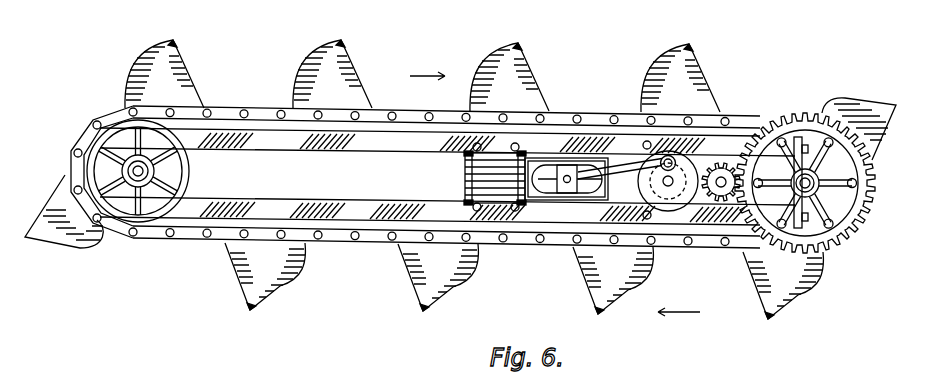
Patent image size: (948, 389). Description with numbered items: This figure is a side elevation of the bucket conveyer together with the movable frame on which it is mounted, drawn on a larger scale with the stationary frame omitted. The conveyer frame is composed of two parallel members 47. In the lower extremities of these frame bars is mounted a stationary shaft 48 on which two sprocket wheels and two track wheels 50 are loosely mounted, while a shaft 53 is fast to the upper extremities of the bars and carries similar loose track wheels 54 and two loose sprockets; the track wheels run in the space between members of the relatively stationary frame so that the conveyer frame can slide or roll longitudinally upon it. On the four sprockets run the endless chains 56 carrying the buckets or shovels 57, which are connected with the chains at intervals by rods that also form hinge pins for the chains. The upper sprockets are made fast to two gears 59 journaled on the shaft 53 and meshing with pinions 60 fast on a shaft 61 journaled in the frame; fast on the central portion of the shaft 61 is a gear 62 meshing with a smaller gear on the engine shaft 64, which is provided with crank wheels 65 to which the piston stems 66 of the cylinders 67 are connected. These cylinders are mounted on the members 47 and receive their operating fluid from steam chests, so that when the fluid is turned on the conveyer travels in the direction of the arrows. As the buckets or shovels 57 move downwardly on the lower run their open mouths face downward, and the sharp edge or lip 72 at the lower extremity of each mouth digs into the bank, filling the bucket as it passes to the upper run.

The parallel members 47 is at (340, 146).
The stationary shaft 48 is at (126, 171).
The track wheels 50 is at (126, 166).
The shaft 53 is at (806, 183).
The track wheels 54 is at (847, 205).
The endless chains 56 is at (368, 244).
The buckets or shovels 57 is at (186, 95).
The gears 59 is at (873, 210).
The pinions 60 is at (714, 200).
The shaft 61 is at (721, 182).
The gear 62 is at (710, 207).
The engine shaft 64 is at (668, 180).
The crank wheels 65 is at (668, 180).
The piston stems 66 is at (637, 172).
The cylinders 67 is at (495, 177).
The sharp edge or lip 72 is at (25, 239).